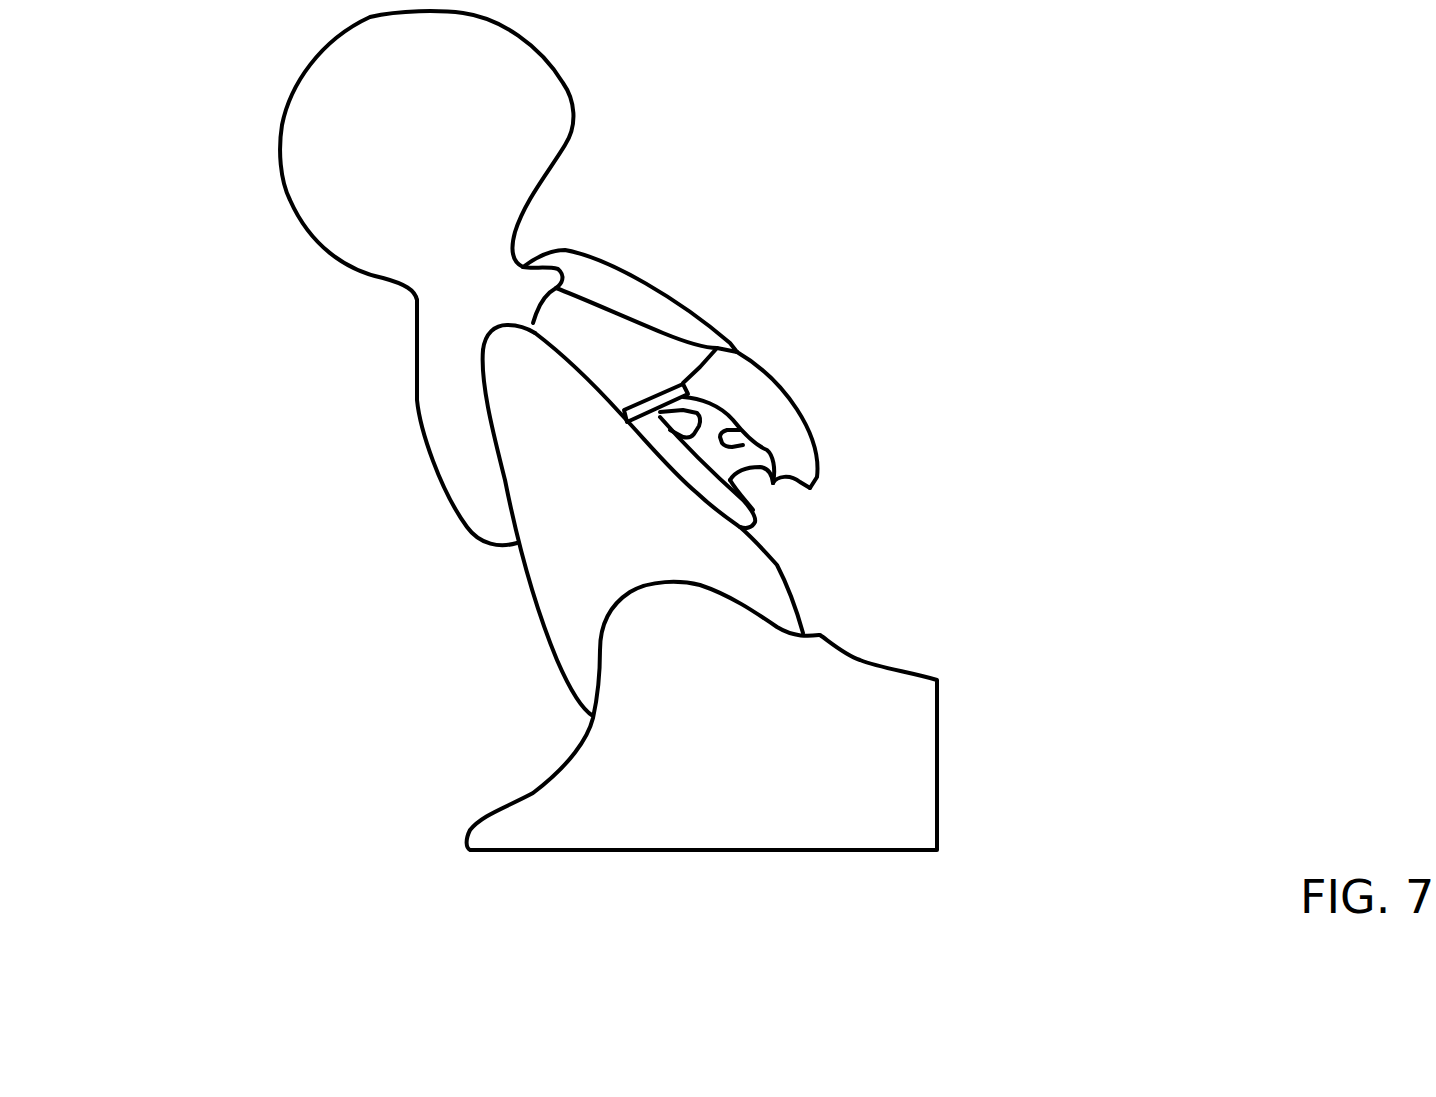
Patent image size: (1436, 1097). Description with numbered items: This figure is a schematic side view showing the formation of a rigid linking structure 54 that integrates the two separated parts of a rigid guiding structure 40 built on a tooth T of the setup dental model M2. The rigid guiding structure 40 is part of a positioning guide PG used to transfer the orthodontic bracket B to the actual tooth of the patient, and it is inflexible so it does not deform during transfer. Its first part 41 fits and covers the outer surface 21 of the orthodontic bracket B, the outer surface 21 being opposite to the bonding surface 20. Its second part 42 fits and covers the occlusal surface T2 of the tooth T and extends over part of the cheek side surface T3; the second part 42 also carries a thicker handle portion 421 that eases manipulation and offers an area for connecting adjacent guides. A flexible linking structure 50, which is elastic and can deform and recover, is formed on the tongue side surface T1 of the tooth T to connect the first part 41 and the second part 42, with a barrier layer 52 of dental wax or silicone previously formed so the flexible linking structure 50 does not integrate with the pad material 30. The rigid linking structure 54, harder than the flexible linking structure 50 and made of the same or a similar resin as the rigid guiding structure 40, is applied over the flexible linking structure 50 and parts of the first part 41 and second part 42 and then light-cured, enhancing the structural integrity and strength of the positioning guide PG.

The rigid guiding structure 40 is at (320, 278).
The handle portion 421 is at (343, 152).
The second part 42 is at (460, 407).
The positioning guide PG is at (603, 90).
The tooth T is at (593, 460).
The tongue side surface T1 is at (690, 498).
The occlusal surface T2 is at (490, 320).
The cheek side surface T3 is at (497, 430).
The flexible linking structure 50 is at (661, 309).
The rigid linking structure 54 is at (600, 283).
The barrier layer 52 is at (686, 385).
The bonding surface 20 is at (789, 444).
The outer surface 21 is at (730, 415).
The first part 41 is at (818, 463).
The orthodontic bracket B is at (755, 495).
The pad material 30 is at (737, 518).
The setup dental model M2 is at (572, 722).